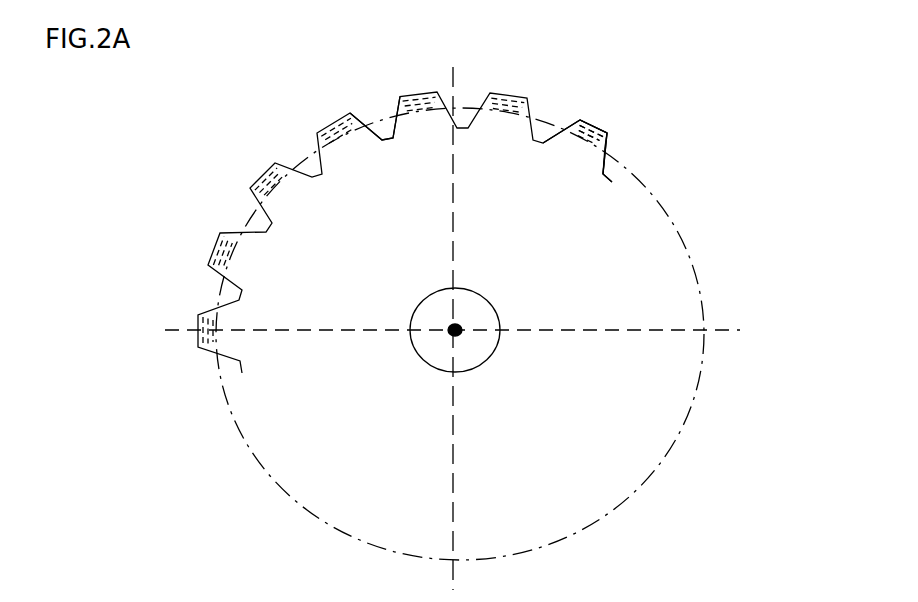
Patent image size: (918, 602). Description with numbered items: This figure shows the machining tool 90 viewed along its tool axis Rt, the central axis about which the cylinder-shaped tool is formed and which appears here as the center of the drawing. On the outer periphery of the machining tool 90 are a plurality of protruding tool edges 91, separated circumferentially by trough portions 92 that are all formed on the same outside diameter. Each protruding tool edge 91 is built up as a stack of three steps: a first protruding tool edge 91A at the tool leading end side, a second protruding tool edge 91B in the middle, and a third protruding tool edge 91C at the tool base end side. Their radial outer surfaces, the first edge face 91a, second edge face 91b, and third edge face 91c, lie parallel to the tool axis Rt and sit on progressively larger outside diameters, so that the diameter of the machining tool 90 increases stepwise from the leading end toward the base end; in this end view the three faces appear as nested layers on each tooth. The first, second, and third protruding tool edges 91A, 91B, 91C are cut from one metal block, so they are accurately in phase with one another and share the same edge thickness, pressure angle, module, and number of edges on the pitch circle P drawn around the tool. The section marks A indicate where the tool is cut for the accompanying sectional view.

The machining tool 90 is at (522, 55).
The protruding tool edge 91 is at (705, 36).
The first edge face 91a is at (605, 137).
The second edge face 91b is at (593, 125).
The third edge face 91c is at (582, 118).
The first protruding tool edge 91A is at (607, 138).
The second protruding tool edge 91B is at (607, 136).
The third protruding tool edge 91C is at (607, 134).
The trough portion 92 is at (387, 120).
The tool axis Rt is at (460, 330).
The pitch circle P is at (682, 432).
The section line A- A is at (177, 318).